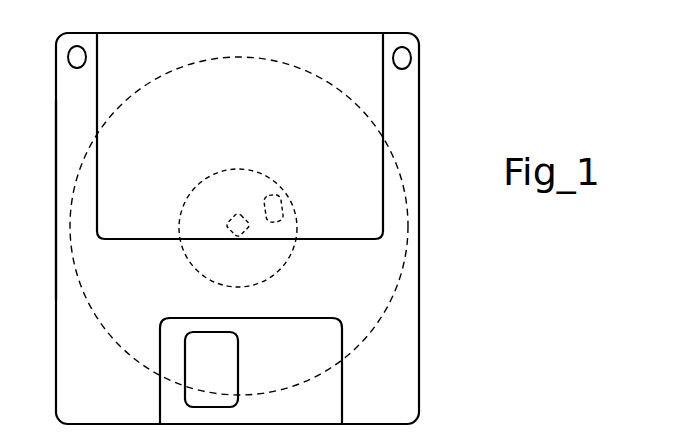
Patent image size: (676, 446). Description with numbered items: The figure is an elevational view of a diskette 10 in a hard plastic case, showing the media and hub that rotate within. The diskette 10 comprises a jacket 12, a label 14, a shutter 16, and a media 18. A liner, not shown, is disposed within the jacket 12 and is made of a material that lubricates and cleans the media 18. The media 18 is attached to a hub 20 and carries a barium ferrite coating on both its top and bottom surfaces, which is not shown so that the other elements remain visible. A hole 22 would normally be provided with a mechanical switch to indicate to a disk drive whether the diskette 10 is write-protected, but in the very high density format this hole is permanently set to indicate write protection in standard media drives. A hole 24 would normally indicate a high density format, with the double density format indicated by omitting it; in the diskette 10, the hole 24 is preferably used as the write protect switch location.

The diskette 10 is at (482, 114).
The jacket 12 is at (105, 385).
The label 14 is at (143, 66).
The shutter 16 is at (330, 410).
The media 18 is at (377, 327).
The hub 20 is at (278, 271).
The hole 22 is at (411, 56).
The hole 24 is at (68, 62).